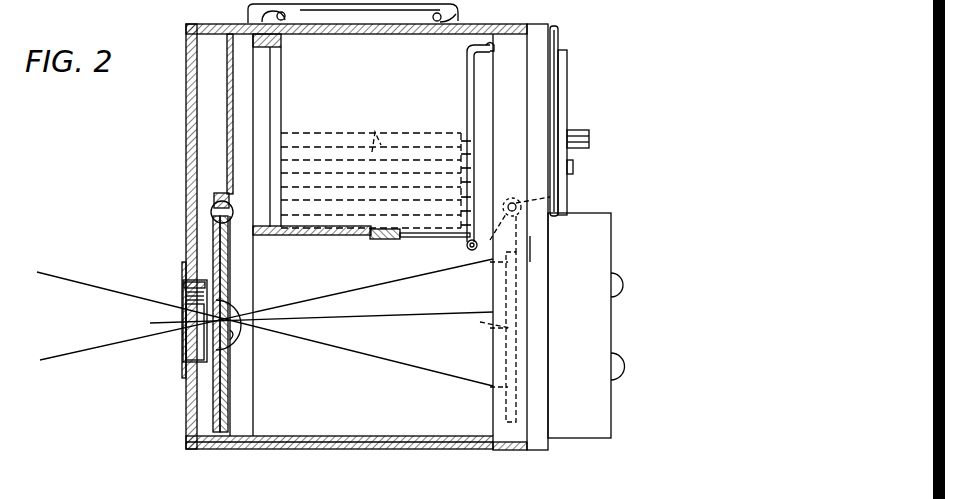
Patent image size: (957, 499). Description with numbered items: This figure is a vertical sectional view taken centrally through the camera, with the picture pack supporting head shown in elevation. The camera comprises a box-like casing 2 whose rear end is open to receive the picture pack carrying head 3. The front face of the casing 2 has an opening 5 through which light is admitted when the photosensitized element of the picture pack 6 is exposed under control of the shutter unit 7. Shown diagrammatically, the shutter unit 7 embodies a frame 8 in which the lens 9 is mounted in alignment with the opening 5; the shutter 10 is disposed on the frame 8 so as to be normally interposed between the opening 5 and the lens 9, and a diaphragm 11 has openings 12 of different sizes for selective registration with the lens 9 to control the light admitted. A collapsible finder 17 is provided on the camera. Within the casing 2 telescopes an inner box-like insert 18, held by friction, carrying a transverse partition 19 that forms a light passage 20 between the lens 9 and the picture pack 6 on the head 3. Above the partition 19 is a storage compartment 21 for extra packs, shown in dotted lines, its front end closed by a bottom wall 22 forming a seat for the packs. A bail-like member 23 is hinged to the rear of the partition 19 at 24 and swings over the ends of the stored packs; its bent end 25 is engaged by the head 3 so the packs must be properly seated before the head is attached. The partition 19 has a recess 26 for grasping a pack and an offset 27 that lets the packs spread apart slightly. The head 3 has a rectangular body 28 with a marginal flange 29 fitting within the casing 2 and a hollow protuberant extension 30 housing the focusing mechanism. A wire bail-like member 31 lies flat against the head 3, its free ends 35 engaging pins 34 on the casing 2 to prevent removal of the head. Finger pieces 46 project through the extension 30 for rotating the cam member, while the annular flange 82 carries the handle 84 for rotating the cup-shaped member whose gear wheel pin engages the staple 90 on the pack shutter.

The casing 2 is at (343, 254).
The picture pack carrying head 3 is at (551, 251).
The opening 5 is at (186, 296).
The picture pack 6 is at (435, 220).
The shutter unit 7 is at (228, 222).
The frame 8 is at (196, 128).
The lens 9 is at (236, 306).
The shutter 10 is at (228, 235).
The diaphragm 11 is at (228, 250).
The openings 12 is at (236, 338).
The collapsible finder 17 is at (248, 14).
The insert 18 is at (303, 436).
The partition 19 is at (302, 236).
The light passage 20 is at (265, 322).
The storage compartment 21 is at (371, 146).
The bottom wall 22 is at (282, 59).
The bail-like member 23 is at (467, 98).
The hinge connection 24 is at (466, 246).
The bent end 25 is at (492, 50).
The recess 26 is at (428, 238).
The offset 27 is at (376, 240).
The body 28 is at (546, 52).
The marginal flange 29 is at (500, 450).
The protuberant extension 30 is at (606, 238).
The bail-like member 31 is at (556, 92).
The pins 34 is at (512, 203).
The free ends 35 is at (541, 249).
The finger pieces 46 is at (622, 355).
The annular flange 82 is at (568, 111).
The handle 84 is at (590, 140).
The staple 90 is at (471, 154).